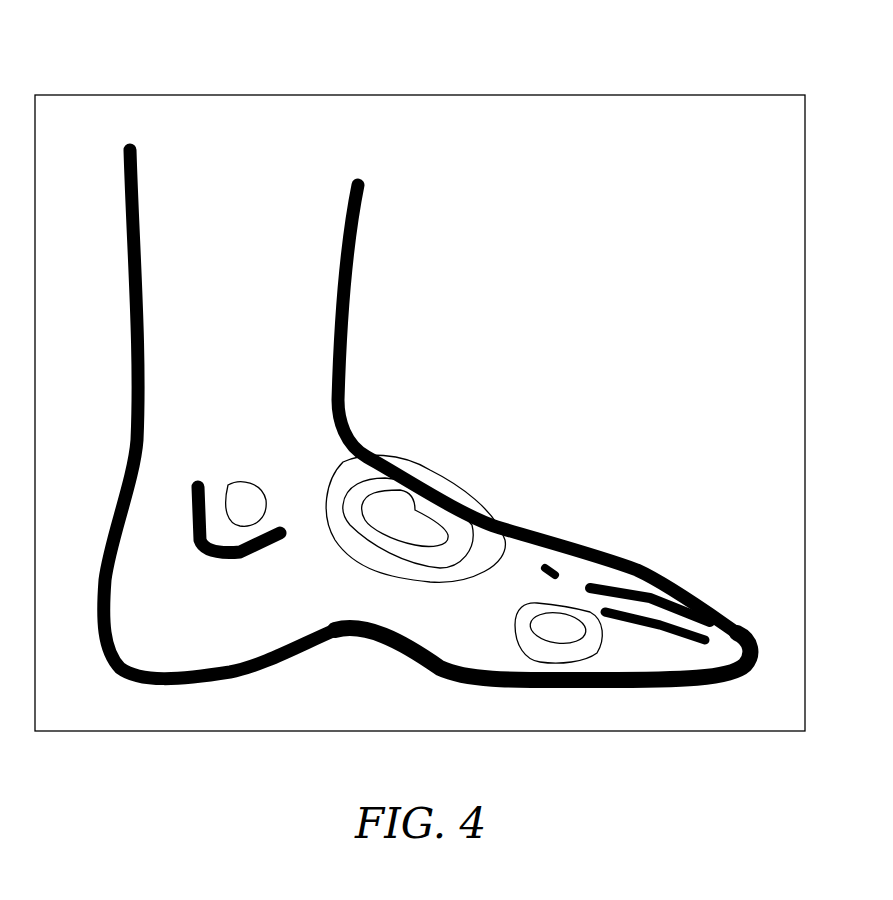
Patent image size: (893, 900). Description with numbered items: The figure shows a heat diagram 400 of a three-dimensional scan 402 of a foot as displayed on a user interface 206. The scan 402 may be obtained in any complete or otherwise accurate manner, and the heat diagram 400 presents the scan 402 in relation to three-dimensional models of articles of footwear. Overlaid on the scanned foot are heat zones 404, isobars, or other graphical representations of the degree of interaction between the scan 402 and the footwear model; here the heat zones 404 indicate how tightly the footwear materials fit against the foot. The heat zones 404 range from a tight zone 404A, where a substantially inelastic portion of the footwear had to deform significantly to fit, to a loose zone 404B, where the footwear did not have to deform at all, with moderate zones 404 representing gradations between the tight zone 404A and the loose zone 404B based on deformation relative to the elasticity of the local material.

The user interface 206 is at (152, 95).
The heat diagram 400 is at (652, 256).
The 3D scan 402 is at (300, 333).
The heat zones 404 is at (343, 470).
The tight zone 404A is at (386, 506).
The loose zone 404B is at (237, 598).